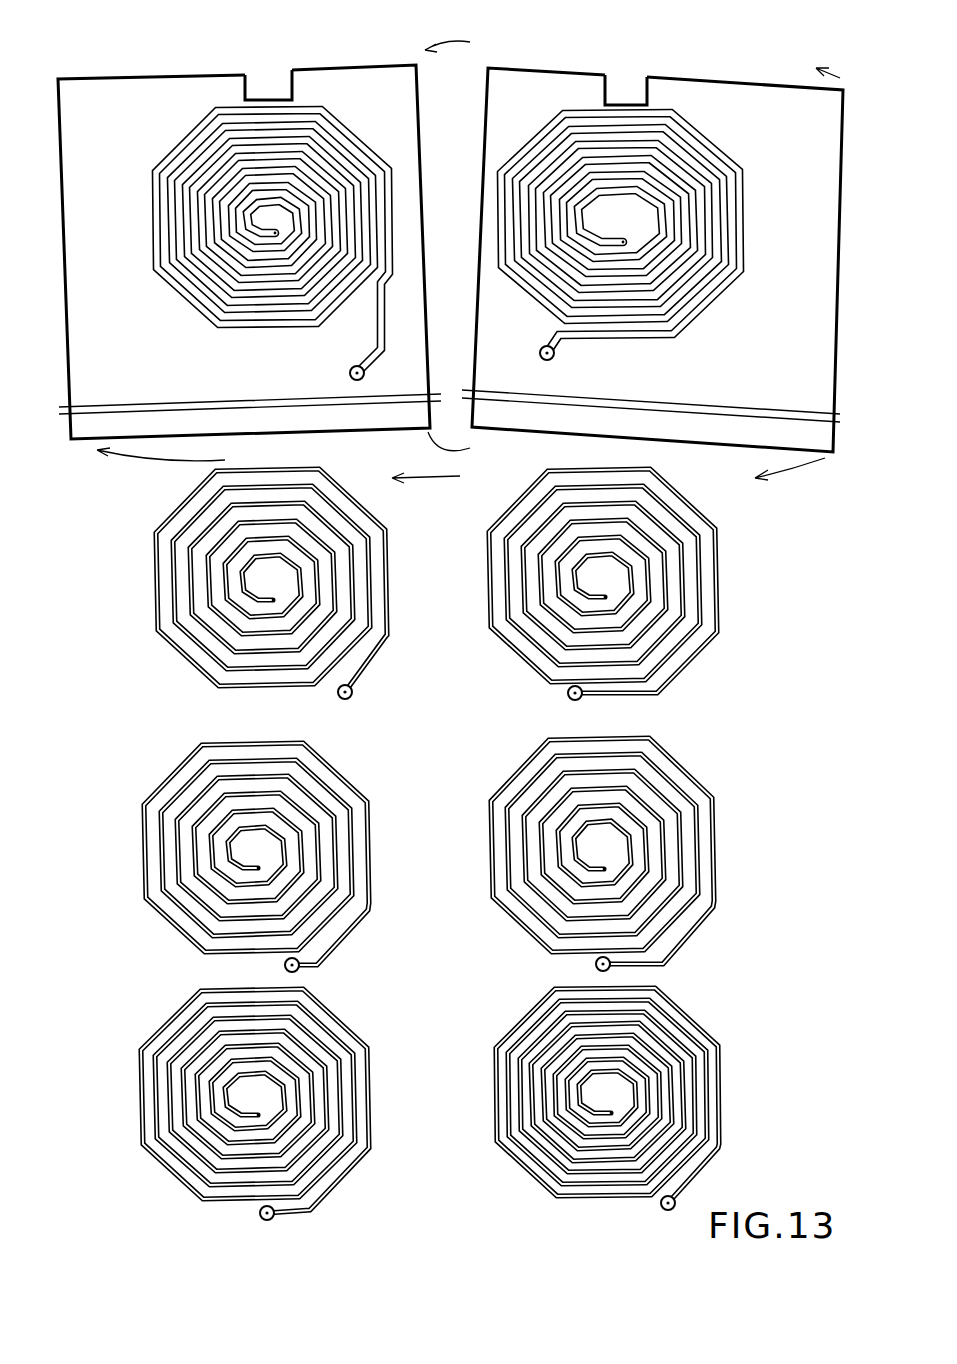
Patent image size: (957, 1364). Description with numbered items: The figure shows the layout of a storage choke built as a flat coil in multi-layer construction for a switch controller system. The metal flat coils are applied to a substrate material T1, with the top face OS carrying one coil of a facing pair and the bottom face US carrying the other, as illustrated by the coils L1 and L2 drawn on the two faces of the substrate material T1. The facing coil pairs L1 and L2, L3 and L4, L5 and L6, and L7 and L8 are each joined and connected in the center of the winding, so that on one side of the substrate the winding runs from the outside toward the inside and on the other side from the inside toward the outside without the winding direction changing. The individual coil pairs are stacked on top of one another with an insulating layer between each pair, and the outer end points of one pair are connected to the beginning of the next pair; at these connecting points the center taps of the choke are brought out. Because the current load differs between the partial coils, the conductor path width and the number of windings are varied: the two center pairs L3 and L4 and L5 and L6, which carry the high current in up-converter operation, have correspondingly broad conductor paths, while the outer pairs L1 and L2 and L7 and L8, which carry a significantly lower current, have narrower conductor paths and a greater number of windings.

The top face OS is at (104, 98).
The bottom face US is at (748, 108).
The substrate material T1 is at (141, 74).
The coil of first (outer) coil pair L1 is at (327, 104).
The coil of first (outer) coil pair L2 is at (691, 107).
The coil of second (inner) coil pair L3 is at (145, 574).
The coil of second (inner) coil pair L4 is at (721, 553).
The coil of third (inner) coil pair L5 is at (145, 852).
The coil of third (inner) coil pair L6 is at (716, 812).
The coil of fourth (outer) coil pair L7 is at (140, 1102).
The coil of fourth (outer) coil pair L8 is at (720, 1065).